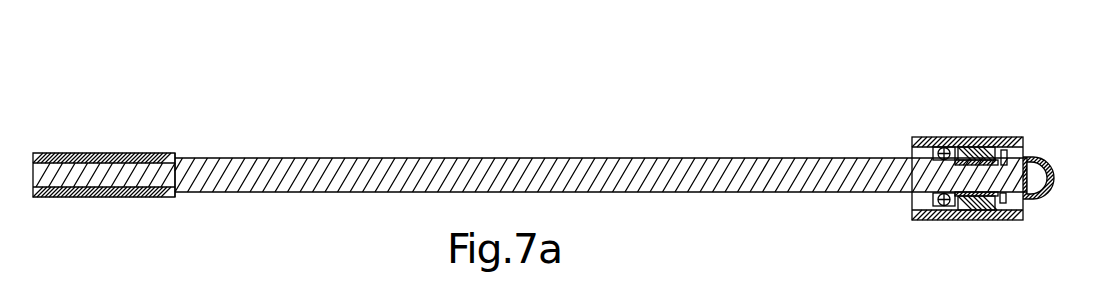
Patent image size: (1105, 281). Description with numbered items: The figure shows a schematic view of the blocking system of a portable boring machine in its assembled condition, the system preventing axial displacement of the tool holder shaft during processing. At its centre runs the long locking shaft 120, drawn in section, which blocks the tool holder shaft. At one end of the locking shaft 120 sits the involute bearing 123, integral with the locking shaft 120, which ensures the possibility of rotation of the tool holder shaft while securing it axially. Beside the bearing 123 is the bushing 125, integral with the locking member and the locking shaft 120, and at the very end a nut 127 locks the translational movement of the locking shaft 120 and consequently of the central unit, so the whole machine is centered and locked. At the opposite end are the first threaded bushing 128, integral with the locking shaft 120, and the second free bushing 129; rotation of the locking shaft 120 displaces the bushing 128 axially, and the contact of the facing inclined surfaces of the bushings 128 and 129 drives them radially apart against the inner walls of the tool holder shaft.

The locking shaft 120 is at (994, 163).
The involute bearing 123 is at (967, 149).
The bushing 125 is at (997, 233).
The nut 127 is at (1040, 219).
The first threaded bushing 128 is at (104, 211).
The second free bushing 129 is at (108, 217).